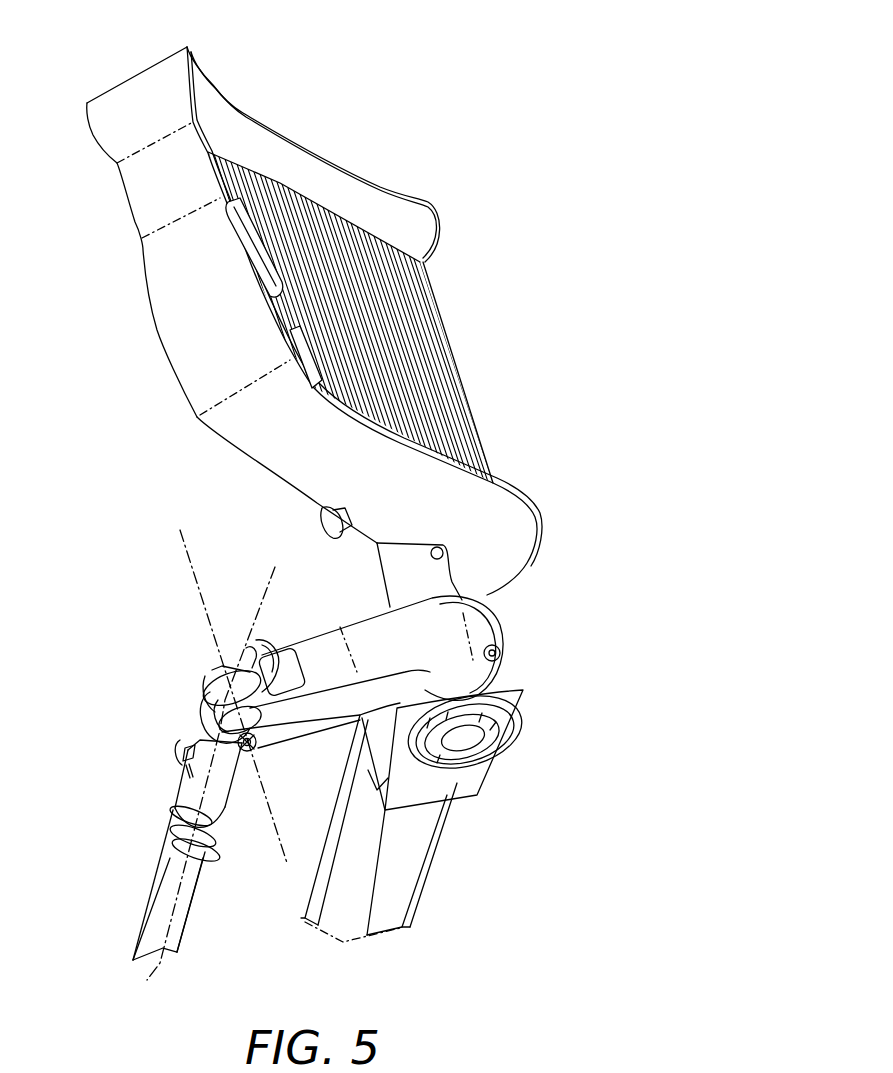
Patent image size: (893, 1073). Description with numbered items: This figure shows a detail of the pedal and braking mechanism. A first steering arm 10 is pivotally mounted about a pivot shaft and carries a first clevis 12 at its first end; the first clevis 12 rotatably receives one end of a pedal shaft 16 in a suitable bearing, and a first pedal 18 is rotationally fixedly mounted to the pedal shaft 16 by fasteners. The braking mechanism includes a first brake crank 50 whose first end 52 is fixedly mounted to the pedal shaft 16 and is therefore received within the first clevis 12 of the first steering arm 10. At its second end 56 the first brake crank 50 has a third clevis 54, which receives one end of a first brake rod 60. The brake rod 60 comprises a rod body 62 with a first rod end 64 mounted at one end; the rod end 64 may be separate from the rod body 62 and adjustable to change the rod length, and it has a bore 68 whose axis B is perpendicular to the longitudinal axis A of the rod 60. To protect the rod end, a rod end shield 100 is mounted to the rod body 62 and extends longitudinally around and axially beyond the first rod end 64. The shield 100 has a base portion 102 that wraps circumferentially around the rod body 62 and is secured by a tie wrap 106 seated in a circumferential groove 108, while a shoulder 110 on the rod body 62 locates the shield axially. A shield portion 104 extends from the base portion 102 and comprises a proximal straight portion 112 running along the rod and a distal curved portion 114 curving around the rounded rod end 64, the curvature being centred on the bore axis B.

The first steering arm 10 is at (422, 837).
The first clevis 12 is at (380, 787).
The pedal shaft 16 is at (493, 737).
The first pedal 18 is at (455, 346).
The first brake crank 50 is at (342, 710).
The first end 52 is at (465, 657).
The third clevis 54 is at (273, 660).
The second end 56 is at (267, 730).
The first brake rod 60 is at (126, 940).
The rod body 62 is at (160, 903).
The first rod end 64 is at (207, 700).
The bore 68 is at (210, 683).
The rod end shield 100 is at (222, 838).
The base portion 102 is at (205, 850).
The shield portion 104 is at (287, 667).
The tie wrap 106 is at (172, 840).
The groove 108 is at (172, 813).
The shoulder 110 is at (170, 830).
The proximal straight portion 112 is at (213, 803).
The distal curved portion 114 is at (253, 647).